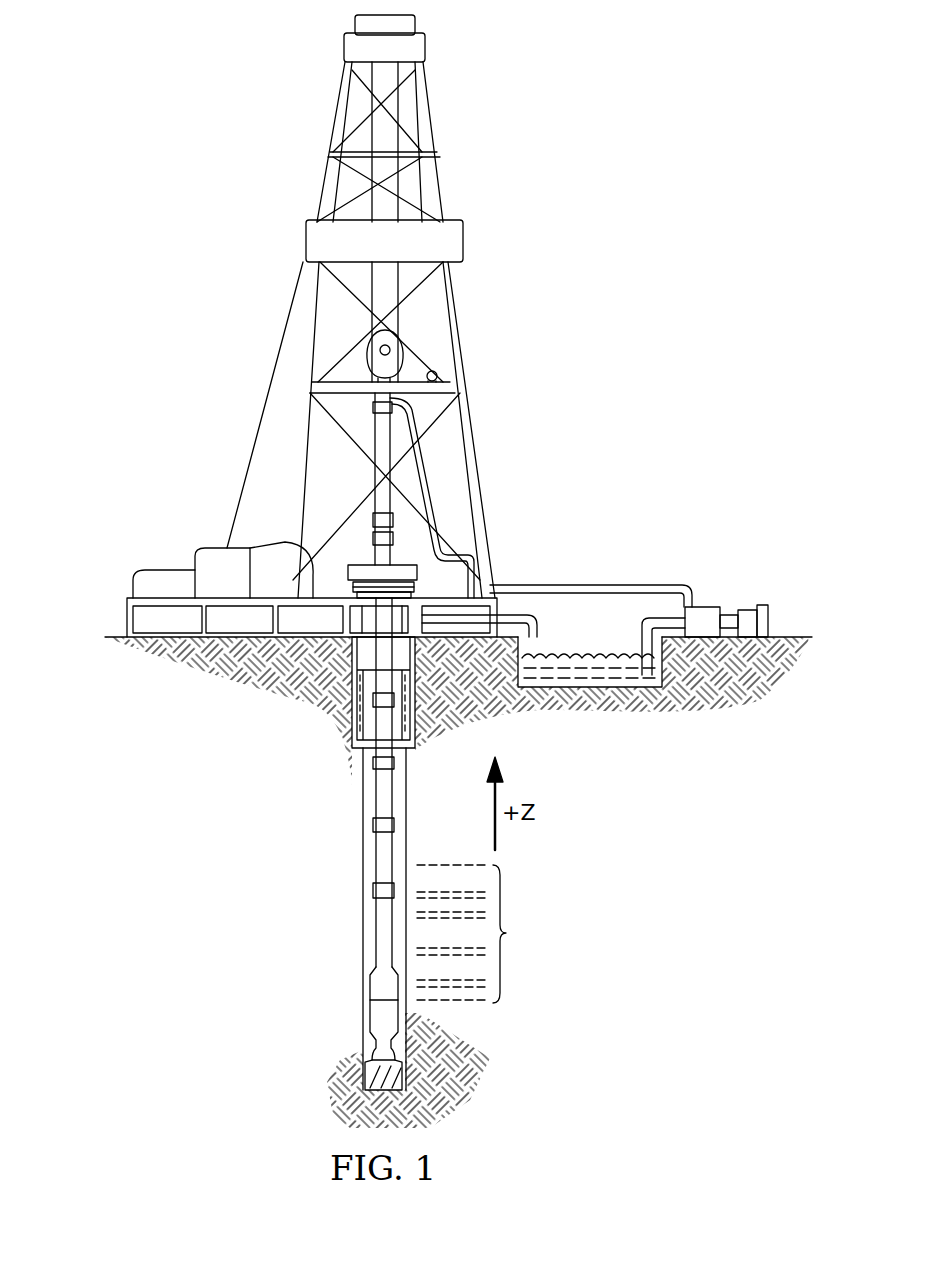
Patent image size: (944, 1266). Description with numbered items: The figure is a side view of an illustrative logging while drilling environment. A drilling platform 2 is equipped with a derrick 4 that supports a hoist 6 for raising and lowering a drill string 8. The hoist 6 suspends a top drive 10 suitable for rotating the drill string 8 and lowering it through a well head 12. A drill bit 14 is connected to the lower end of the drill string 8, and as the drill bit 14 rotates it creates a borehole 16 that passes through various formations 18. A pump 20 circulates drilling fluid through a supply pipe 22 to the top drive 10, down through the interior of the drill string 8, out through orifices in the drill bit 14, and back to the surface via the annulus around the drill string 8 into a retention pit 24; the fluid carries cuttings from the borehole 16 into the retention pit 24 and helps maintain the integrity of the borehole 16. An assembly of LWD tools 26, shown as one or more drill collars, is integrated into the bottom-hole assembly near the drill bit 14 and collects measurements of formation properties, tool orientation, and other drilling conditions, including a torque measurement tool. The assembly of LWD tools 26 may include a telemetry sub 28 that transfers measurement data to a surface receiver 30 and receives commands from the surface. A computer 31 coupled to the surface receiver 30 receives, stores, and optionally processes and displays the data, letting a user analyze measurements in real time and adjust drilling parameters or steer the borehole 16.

The drilling platform 2 is at (127, 620).
The derrick 4 is at (432, 140).
The hoist 6 is at (352, 368).
The drill string 8 is at (395, 790).
The top drive 10 is at (382, 445).
The well head 12 is at (362, 565).
The drill bit 14 is at (403, 1068).
The borehole 16 is at (408, 812).
The formations 18 is at (481, 934).
The pump 20 is at (707, 607).
The supply pipe 22 is at (598, 583).
The retention pit 24 is at (590, 667).
The assembly of LWD tools 26 is at (378, 1018).
The telemetry sub 28 is at (369, 990).
The surface receiver 30 is at (393, 520).
The computer 31 is at (215, 565).